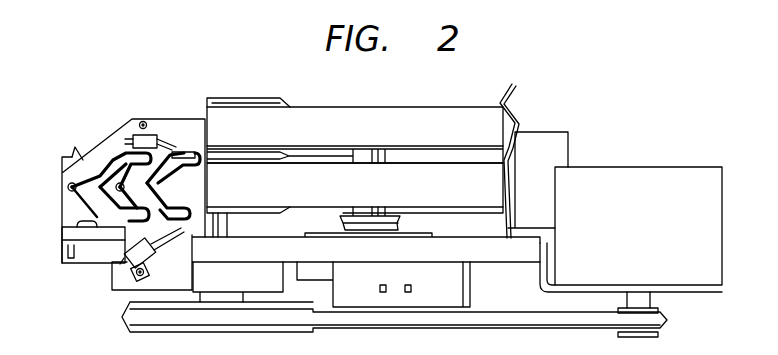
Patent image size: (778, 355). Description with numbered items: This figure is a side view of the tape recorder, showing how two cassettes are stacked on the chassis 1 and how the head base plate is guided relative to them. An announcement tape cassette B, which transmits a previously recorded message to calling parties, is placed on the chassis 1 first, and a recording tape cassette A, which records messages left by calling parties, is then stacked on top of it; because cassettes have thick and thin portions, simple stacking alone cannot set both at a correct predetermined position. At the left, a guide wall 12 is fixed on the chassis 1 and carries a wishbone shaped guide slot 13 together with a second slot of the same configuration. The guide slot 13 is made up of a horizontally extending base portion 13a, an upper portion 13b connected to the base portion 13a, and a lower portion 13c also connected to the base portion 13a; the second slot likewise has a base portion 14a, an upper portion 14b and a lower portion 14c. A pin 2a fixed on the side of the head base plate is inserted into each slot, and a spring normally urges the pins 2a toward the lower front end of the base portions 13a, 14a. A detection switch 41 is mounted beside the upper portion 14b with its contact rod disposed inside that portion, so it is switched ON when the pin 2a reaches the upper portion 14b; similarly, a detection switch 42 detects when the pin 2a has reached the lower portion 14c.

The chassis 1 is at (515, 267).
The pin 2a is at (76, 147).
The guide wall 12 is at (184, 119).
The guide slot 13 is at (80, 220).
The base portion 13a is at (82, 191).
The upper portion 13b is at (118, 184).
The lower portion 13c is at (132, 222).
The base portion 14a is at (115, 218).
The upper portion 14b is at (187, 152).
The lower portion 14c is at (182, 210).
The detection switch 41 is at (139, 129).
The detection switch 42 is at (151, 265).
The recording tape cassette A is at (433, 108).
The announcement tape cassette B is at (456, 206).